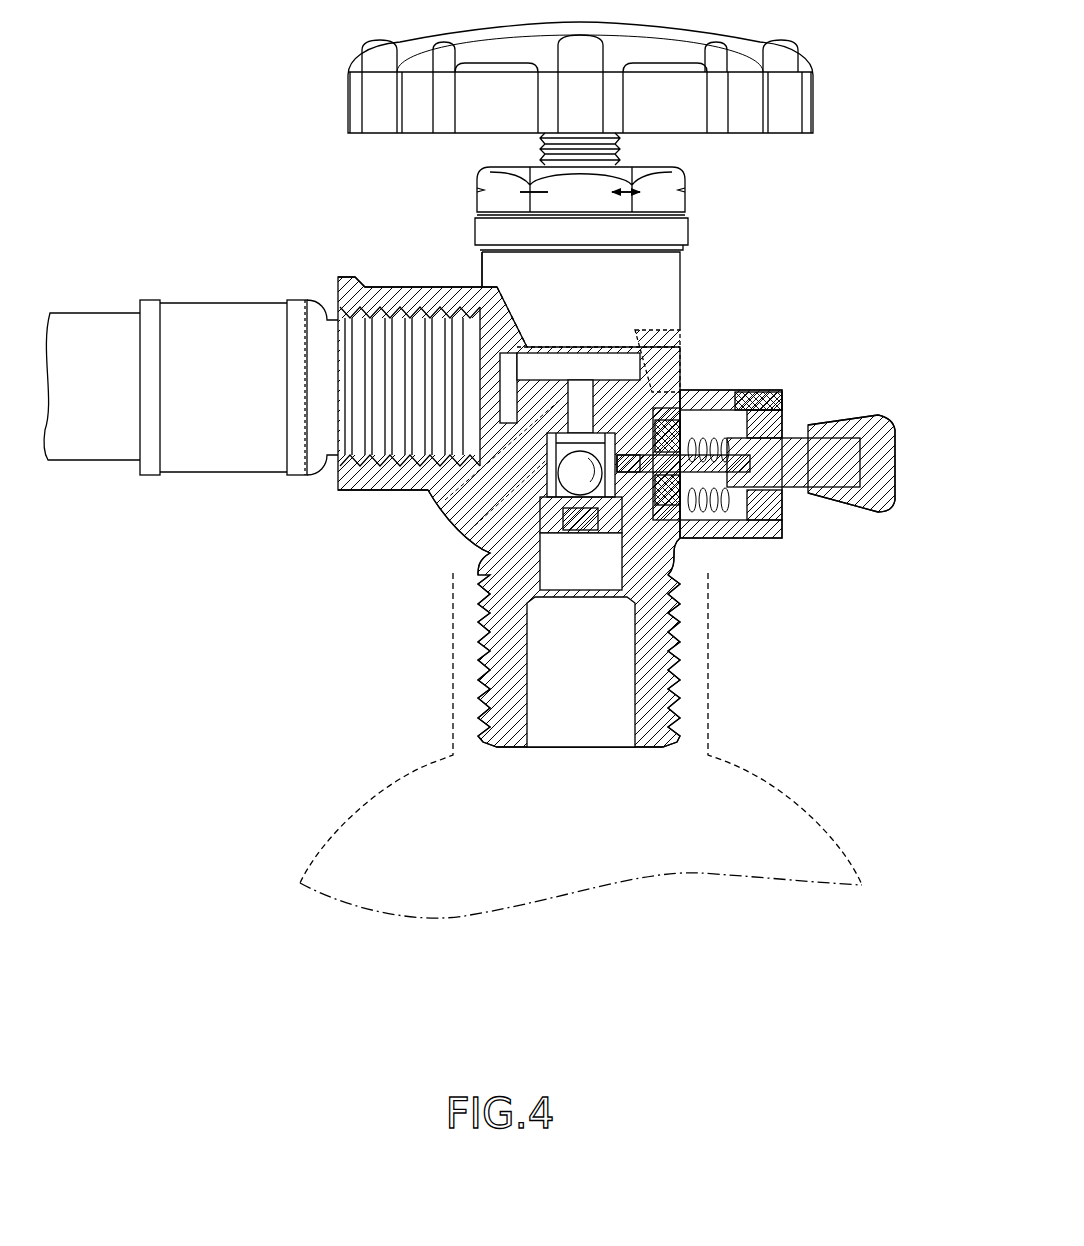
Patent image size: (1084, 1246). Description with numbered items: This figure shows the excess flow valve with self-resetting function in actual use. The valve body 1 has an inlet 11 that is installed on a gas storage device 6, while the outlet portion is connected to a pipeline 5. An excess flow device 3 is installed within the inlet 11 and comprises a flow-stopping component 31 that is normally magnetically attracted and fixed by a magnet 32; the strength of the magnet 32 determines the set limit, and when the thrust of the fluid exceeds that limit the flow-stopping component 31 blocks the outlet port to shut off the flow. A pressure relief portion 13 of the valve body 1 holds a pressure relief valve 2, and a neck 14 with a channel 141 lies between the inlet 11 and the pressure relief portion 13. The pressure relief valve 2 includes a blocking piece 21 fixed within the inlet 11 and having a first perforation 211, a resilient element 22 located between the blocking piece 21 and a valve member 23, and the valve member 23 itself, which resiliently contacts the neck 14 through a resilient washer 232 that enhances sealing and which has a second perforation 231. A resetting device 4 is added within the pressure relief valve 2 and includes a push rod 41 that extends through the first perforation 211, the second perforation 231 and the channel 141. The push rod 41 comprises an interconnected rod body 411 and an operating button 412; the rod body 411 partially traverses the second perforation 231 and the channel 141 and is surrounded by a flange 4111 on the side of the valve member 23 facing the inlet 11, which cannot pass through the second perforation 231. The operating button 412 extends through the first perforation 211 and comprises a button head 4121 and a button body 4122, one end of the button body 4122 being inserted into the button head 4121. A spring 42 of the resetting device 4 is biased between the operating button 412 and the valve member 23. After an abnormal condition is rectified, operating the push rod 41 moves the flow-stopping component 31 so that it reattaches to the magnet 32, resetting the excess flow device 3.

The valve body 1 is at (575, 384).
The inlet 11 is at (681, 655).
The pressure relief portion 13 is at (757, 335).
The neck 14 is at (668, 548).
The channel 141 is at (677, 592).
The pressure relief valve 2 is at (759, 450).
The blocking piece 21 is at (788, 398).
The first perforation 211 is at (781, 523).
The resilient element 22 is at (742, 398).
The valve member 23 is at (650, 410).
The second perforation 231 is at (690, 415).
The resilient washer 232 is at (640, 445).
The excess flow device 3 is at (581, 548).
The flow-stopping component 31 is at (495, 503).
The magnet 32 is at (485, 556).
The resetting device 4 is at (735, 444).
The push rod 41 is at (900, 483).
The rod body 411 is at (686, 408).
The flange 4111 is at (640, 432).
The operating button 412 is at (885, 414).
The button head 4121 is at (920, 433).
The button body 4122 is at (832, 428).
The spring 42 is at (727, 392).
The pipeline 5 is at (127, 297).
The gas storage device 6 is at (805, 818).